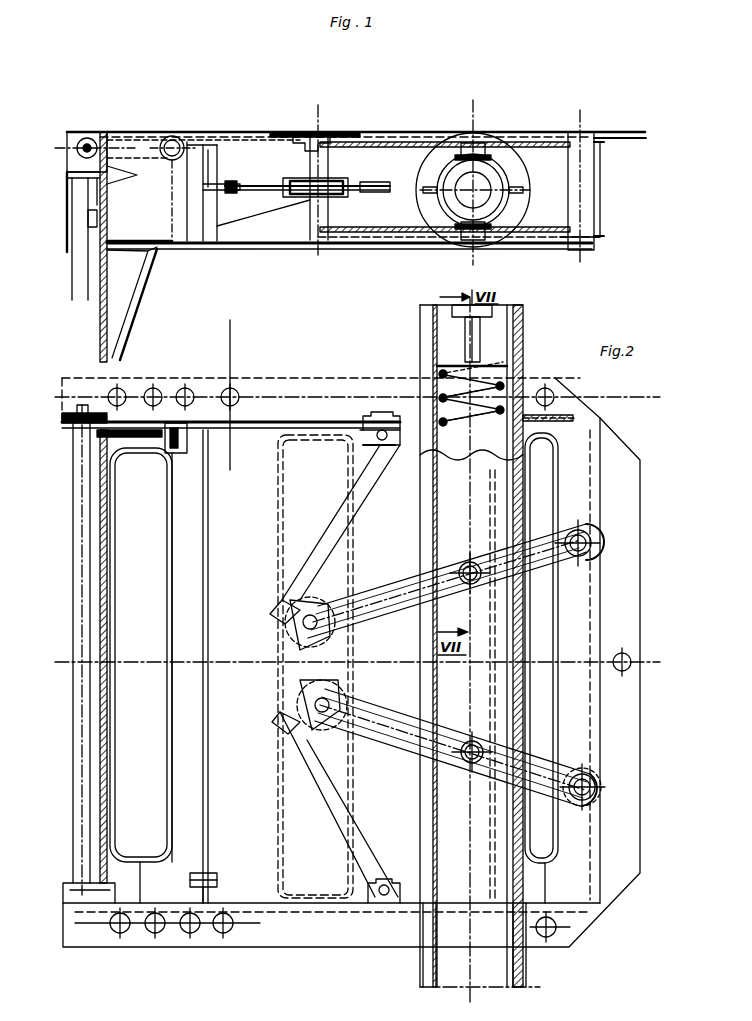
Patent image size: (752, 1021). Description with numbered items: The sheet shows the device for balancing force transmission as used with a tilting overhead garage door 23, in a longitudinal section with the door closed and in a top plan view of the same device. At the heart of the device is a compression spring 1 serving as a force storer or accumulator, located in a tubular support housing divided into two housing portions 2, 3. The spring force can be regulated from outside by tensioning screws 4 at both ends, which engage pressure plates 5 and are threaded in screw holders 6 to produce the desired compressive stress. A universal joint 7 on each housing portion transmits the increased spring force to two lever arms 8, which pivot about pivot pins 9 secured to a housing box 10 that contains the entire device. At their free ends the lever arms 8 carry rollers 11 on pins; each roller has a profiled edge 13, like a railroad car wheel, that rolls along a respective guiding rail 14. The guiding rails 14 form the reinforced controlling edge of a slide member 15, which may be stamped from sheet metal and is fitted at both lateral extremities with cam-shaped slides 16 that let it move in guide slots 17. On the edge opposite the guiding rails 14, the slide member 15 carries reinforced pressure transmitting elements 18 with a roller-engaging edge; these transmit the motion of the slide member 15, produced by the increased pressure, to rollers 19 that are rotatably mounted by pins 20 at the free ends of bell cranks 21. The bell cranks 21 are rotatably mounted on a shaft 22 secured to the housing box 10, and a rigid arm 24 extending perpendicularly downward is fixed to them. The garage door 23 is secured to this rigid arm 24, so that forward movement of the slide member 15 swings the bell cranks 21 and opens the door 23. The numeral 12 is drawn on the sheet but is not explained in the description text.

In FIG. 1, the compression spring 1 is at (490, 165).
In FIG. 2, the compression spring 1 is at (510, 378).
In FIG. 2, the housing portion 2 is at (432, 342).
In FIG. 2, the housing portion 3 is at (430, 870).
In FIG. 2, the tensioning screw 4 is at (455, 313).
In FIG. 2, the pressure plate 5 is at (437, 363).
In FIG. 2, the screw holder 6 is at (466, 330).
In FIG. 1, the universal joint 7 is at (480, 146).
In FIG. 2, the universal joint 7 is at (483, 578).
In FIG. 1, the lever arm 8 is at (380, 138).
In FIG. 2, the lever arm 8 is at (540, 566).
In FIG. 1, the pivot pin 9 is at (605, 183).
In FIG. 2, the pivot pin 9 is at (592, 540).
In FIG. 1, the housing box 10 is at (418, 246).
In FIG. 2, the housing box 10 is at (330, 420).
In FIG. 1, the roller 11 is at (338, 194).
In FIG. 2, the roller 11 is at (290, 638).
In FIG. 1, the shaft 12 is at (323, 140).
In FIG. 2, the shaft 12 is at (303, 622).
In FIG. 1, the profiled edge 13 is at (322, 196).
In FIG. 2, the profiled edge 13 is at (282, 595).
In FIG. 1, the guiding rail 14 is at (290, 192).
In FIG. 2, the guiding rail 14 is at (356, 445).
In FIG. 1, the slide member 15 is at (224, 195).
In FIG. 2, the slide member 15 is at (257, 472).
In FIG. 2, the cam-shaped slide 16 is at (385, 418).
In FIG. 2, the guide slot 17 is at (206, 428).
In FIG. 1, the pressure transmitting element 18 is at (197, 230).
In FIG. 2, the pressure transmitting element 18 is at (203, 887).
In FIG. 1, the roller 19 is at (178, 140).
In FIG. 2, the roller 19 is at (170, 430).
In FIG. 1, the pin 20 is at (153, 258).
In FIG. 1, the bell crank 21 is at (123, 147).
In FIG. 1, the shaft 22 is at (92, 146).
In FIG. 2, the shaft 22 is at (75, 468).
In FIG. 1, the garage door 23 is at (80, 193).
In FIG. 1, the rigid arm 24 is at (100, 312).
In FIG. 2, the rigid arm 24 is at (102, 606).